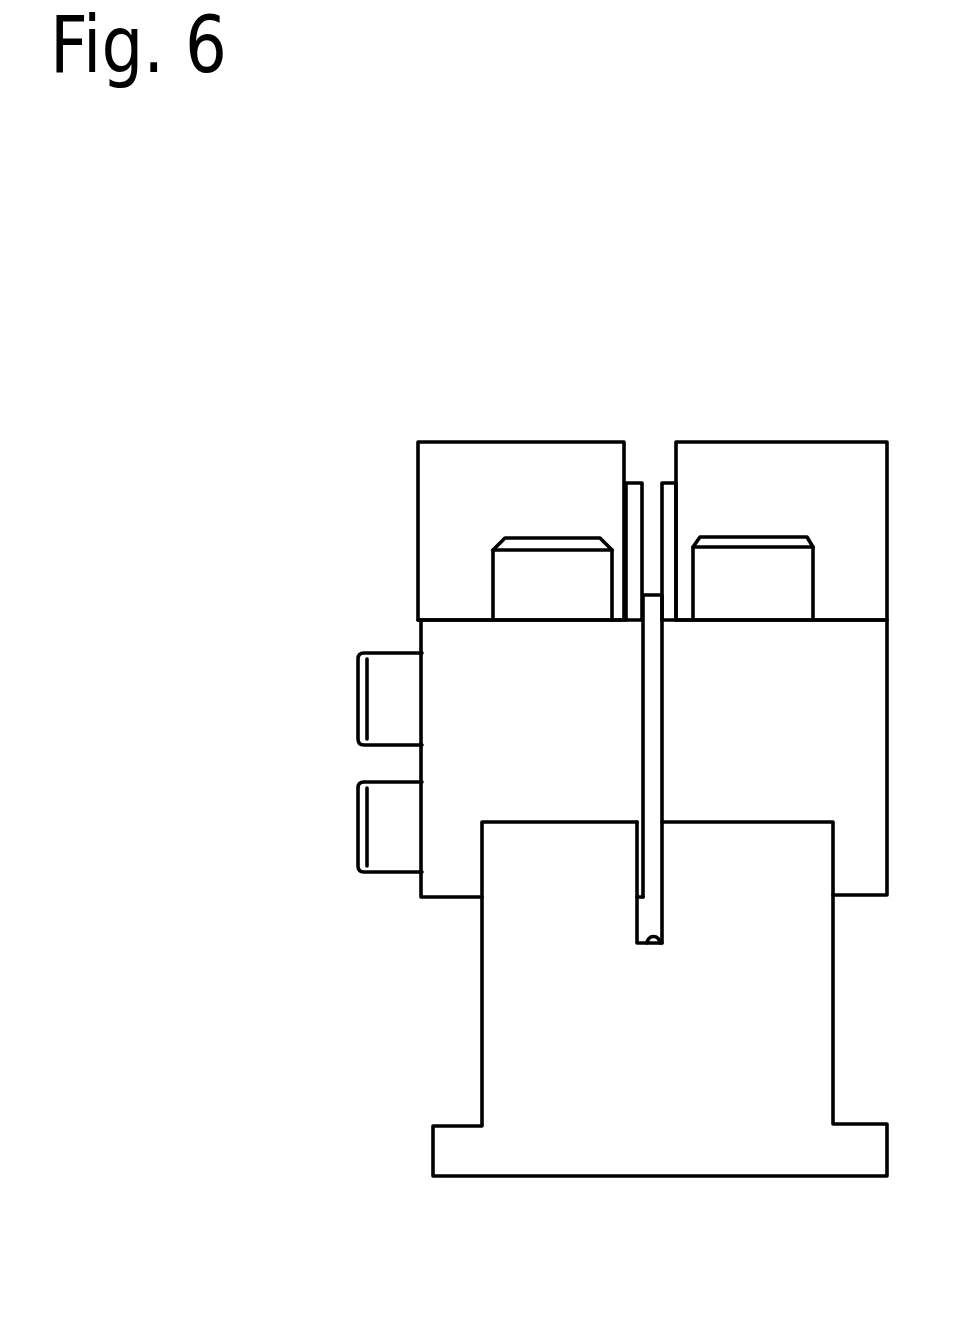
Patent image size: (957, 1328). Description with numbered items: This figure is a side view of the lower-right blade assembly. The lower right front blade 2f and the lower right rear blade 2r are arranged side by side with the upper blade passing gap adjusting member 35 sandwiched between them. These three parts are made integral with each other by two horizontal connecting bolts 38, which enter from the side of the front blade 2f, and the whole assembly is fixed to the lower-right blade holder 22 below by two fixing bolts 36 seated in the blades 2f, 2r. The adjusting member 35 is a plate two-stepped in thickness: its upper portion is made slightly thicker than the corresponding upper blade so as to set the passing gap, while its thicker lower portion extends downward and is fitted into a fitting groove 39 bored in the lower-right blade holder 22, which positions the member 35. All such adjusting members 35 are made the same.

The lower right front blade 2f is at (527, 393).
The lower right rear blade 2r is at (870, 397).
The fixing bolts 36 is at (605, 493).
The upper blade passing gap adjusting member 35 is at (648, 740).
The fitting groove 39 is at (658, 945).
The horizontal connecting bolts 38 is at (360, 728).
The lower-right blade holder 22 is at (510, 1020).